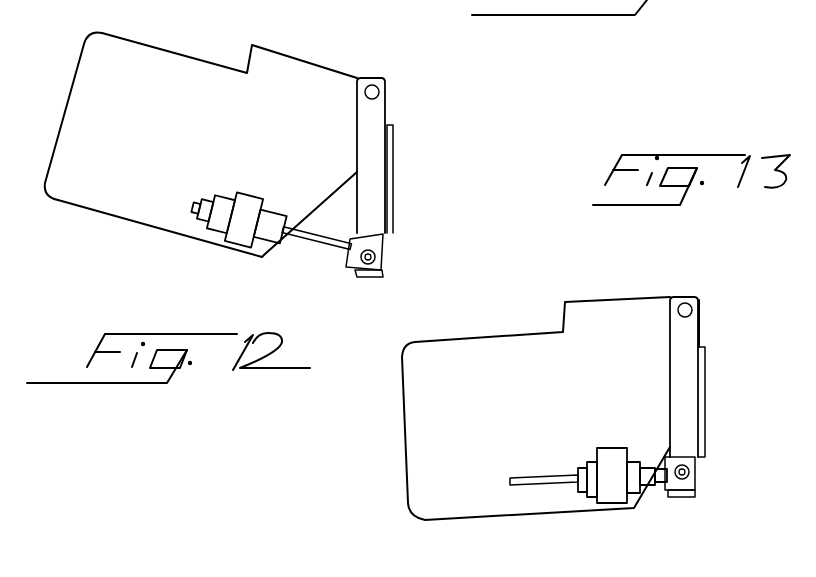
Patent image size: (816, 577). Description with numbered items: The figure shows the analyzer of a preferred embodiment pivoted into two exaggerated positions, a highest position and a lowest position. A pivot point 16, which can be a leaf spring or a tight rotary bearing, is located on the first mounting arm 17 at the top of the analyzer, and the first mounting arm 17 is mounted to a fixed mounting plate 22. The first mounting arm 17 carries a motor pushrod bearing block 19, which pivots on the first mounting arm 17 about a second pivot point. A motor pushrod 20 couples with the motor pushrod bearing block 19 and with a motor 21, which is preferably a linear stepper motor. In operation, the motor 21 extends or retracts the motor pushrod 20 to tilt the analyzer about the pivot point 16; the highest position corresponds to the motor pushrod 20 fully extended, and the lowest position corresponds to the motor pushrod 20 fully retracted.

In FIG. 12, the pivot point 16 is at (380, 92).
In FIG. 13, the pivot point 16 is at (690, 297).
In FIG. 12, the first mounting arm 17 is at (373, 153).
In FIG. 13, the first mounting arm 17 is at (685, 367).
In FIG. 12, the motor pushrod bearing block 19 is at (383, 272).
In FIG. 13, the motor pushrod bearing block 19 is at (684, 494).
In FIG. 12, the motor pushrod 20 is at (333, 245).
In FIG. 13, the motor pushrod 20 is at (560, 480).
In FIG. 12, the motor 21 is at (245, 203).
In FIG. 12, the mounting plate 22 is at (387, 190).
In FIG. 13, the mounting plate 22 is at (703, 402).